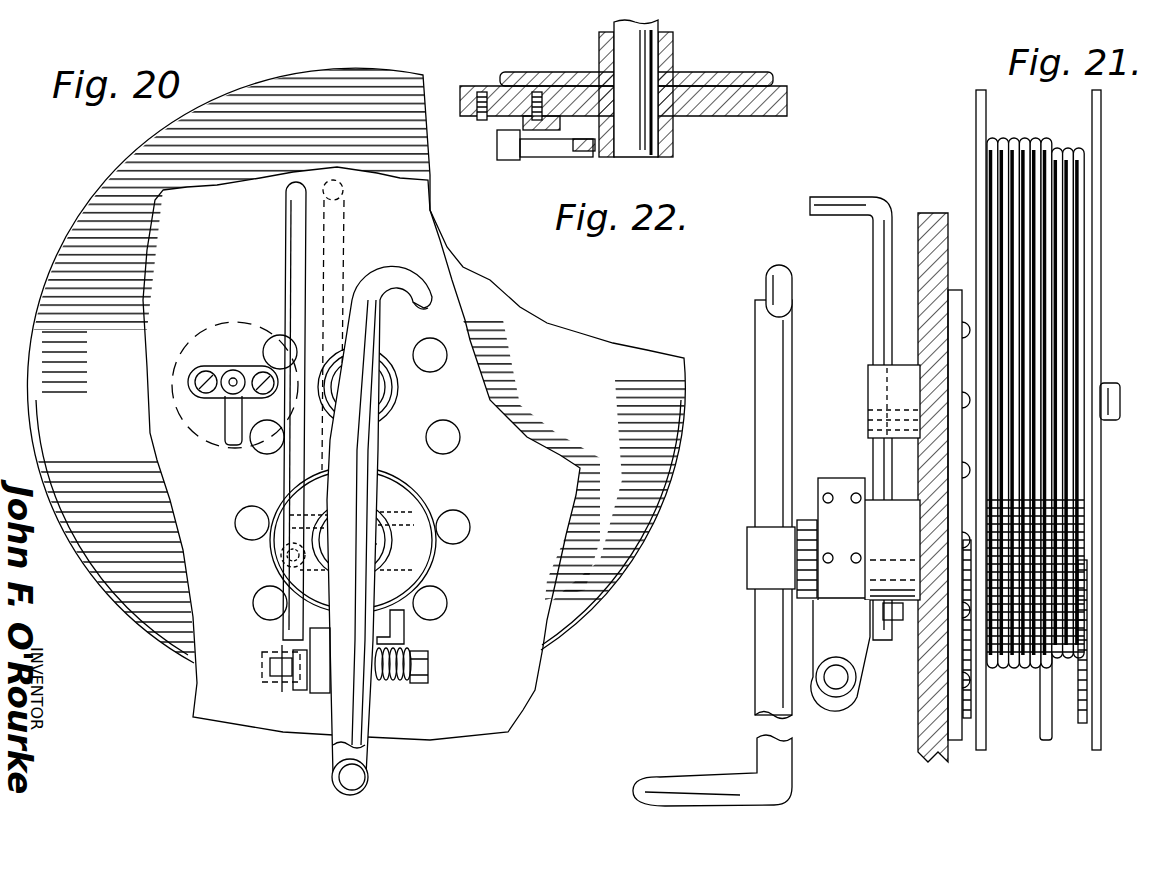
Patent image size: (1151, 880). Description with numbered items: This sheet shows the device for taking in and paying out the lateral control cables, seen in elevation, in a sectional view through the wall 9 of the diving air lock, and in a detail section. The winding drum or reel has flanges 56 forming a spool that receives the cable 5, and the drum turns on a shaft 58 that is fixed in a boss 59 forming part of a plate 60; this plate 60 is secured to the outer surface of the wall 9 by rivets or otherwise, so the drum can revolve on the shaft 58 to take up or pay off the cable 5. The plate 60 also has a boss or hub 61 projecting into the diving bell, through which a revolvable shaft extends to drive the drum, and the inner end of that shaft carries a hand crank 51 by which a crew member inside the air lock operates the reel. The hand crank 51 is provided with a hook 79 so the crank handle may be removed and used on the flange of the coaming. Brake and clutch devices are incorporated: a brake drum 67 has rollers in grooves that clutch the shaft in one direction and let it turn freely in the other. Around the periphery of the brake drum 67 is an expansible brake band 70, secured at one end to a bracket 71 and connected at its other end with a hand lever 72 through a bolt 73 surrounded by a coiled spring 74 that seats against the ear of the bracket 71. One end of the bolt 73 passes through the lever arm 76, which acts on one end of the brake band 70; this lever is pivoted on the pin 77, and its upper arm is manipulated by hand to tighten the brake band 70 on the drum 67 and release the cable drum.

In FIG. 21, the cable 5 is at (1040, 714).
In FIG. 22, the wall 9 is at (762, 118).
In FIG. 21, the wall 9 is at (912, 742).
In FIG. 20, the hand crank 51 is at (376, 336).
In FIG. 21, the hand crank 51 is at (749, 380).
In FIG. 20, the flanges 56 is at (356, 404).
In FIG. 21, the flanges 56 is at (1092, 112).
In FIG. 20, the shaft 58 is at (382, 390).
In FIG. 22, the shaft 58 is at (636, 88).
In FIG. 21, the shaft 58 is at (1115, 420).
In FIG. 20, the boss 59 is at (385, 403).
In FIG. 22, the boss 59 is at (670, 156).
In FIG. 21, the boss 59 is at (898, 390).
In FIG. 22, the plate 60 is at (740, 72).
In FIG. 21, the plate 60 is at (958, 290).
In FIG. 21, the boss or hub 61 is at (891, 550).
In FIG. 20, the brake drum 67 is at (418, 553).
In FIG. 20, the brake band 70 is at (436, 503).
In FIG. 21, the brake band 70 is at (841, 564).
In FIG. 20, the bracket 71 is at (414, 645).
In FIG. 21, the bracket 71 is at (866, 678).
In FIG. 20, the hand lever 72 is at (293, 240).
In FIG. 21, the hand lever 72 is at (872, 318).
In FIG. 20, the bolt 73 is at (429, 670).
In FIG. 21, the bolt 73 is at (836, 682).
In FIG. 20, the coiled spring 74 is at (393, 688).
In FIG. 20, the lever arm 76 is at (300, 692).
In FIG. 20, the pin 77 is at (291, 557).
In FIG. 20, the hook 79 is at (418, 303).
In FIG. 21, the hook 79 is at (768, 300).